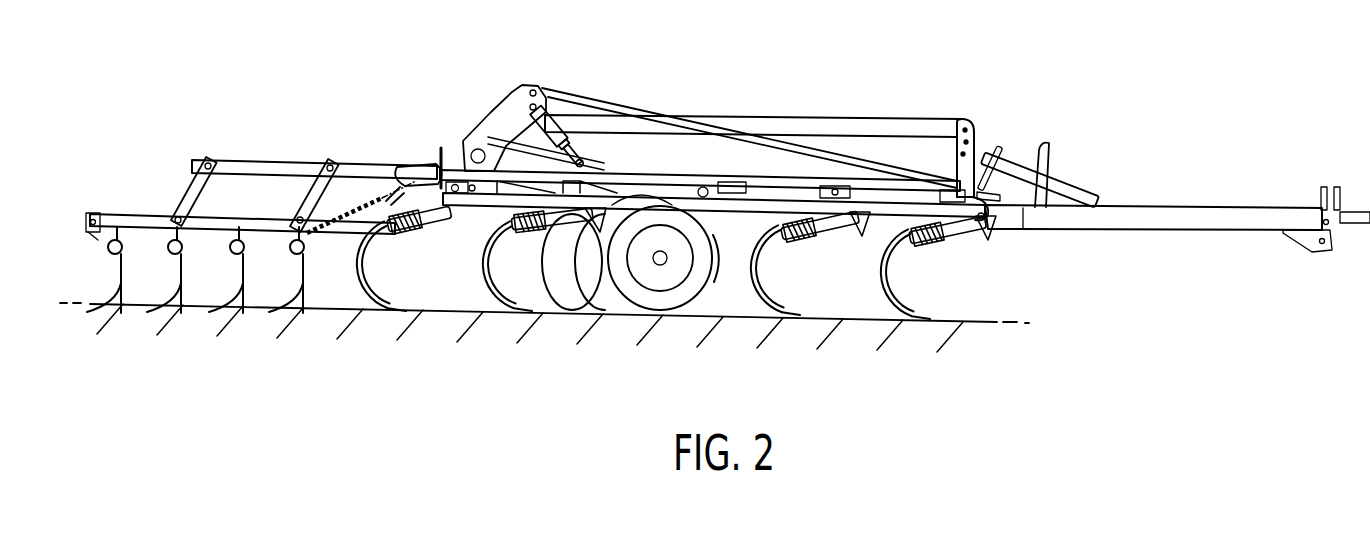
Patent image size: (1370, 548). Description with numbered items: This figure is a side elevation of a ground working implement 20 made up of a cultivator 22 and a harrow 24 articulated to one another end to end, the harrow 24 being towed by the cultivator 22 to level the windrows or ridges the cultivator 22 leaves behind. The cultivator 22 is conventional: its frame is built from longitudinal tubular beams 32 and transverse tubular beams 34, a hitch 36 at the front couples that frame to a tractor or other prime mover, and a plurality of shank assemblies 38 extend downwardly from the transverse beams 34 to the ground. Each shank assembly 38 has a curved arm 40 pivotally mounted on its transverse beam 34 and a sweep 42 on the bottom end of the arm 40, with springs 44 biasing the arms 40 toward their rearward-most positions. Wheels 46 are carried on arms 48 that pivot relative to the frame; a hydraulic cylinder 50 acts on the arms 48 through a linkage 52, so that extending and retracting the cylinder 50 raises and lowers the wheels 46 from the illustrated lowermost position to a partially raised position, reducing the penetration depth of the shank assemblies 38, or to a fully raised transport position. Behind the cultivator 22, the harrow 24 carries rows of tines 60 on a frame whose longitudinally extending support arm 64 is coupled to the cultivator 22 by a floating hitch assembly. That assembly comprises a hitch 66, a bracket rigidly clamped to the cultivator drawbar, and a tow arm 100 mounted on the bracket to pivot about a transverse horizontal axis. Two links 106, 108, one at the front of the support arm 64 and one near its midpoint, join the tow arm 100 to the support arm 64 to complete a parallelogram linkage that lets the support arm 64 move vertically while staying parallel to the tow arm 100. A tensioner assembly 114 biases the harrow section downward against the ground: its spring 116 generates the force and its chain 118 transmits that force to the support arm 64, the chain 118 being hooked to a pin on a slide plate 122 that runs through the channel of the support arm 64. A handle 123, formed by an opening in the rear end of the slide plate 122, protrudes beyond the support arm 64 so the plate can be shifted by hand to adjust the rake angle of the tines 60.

The ground working implement 20 is at (1045, 96).
The cultivator 22 is at (890, 115).
The harrow 24 is at (331, 152).
The longitudinal tubular beams 32 is at (973, 137).
The transverse tubular beams 34 is at (733, 183).
The hitch 36 is at (1193, 215).
The shank assembly 38 is at (479, 270).
The curved arm 40 is at (750, 291).
The sweep 42 is at (786, 313).
The springs 44 is at (808, 192).
The wheels 46 is at (647, 297).
The arms 48 is at (600, 186).
The hydraulic cylinder 50 is at (597, 137).
The linkage 52 is at (514, 106).
The tines 60 is at (123, 283).
The support arms 64 is at (242, 222).
The hitch 66 is at (411, 172).
The tow arm 100 is at (280, 158).
The link 106 is at (307, 187).
The link 108 is at (193, 185).
The tensioner assembly 114 is at (339, 243).
The spring 116 is at (373, 199).
The chain 118 is at (380, 196).
The slide plate 122 is at (88, 218).
The handle 123 is at (90, 237).